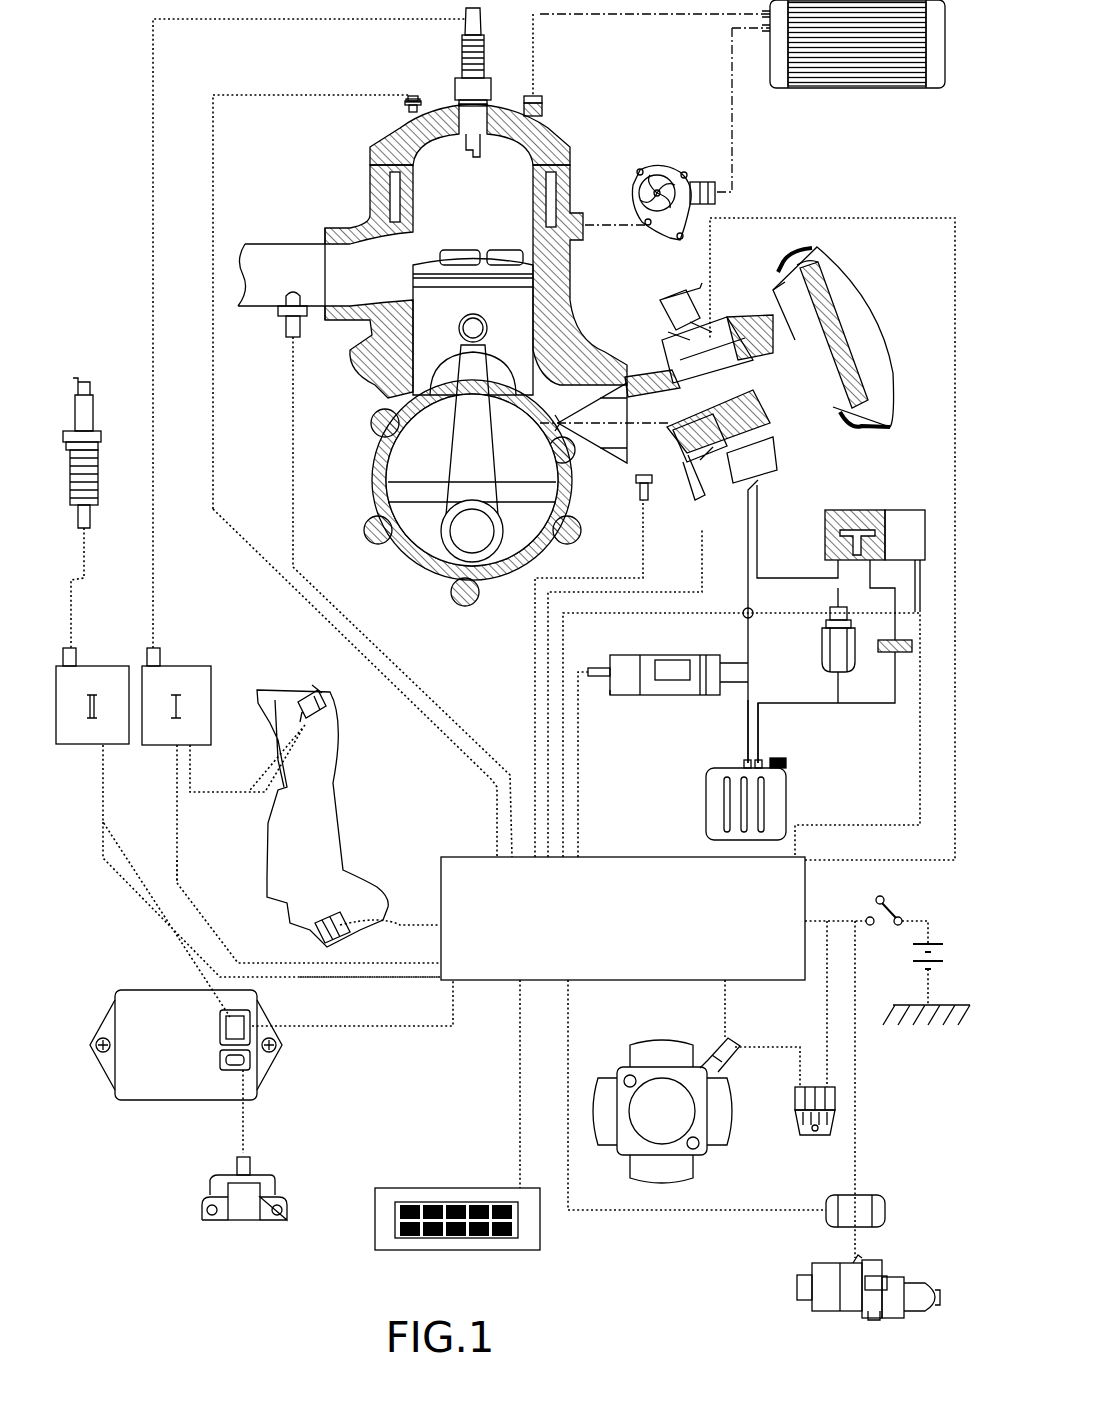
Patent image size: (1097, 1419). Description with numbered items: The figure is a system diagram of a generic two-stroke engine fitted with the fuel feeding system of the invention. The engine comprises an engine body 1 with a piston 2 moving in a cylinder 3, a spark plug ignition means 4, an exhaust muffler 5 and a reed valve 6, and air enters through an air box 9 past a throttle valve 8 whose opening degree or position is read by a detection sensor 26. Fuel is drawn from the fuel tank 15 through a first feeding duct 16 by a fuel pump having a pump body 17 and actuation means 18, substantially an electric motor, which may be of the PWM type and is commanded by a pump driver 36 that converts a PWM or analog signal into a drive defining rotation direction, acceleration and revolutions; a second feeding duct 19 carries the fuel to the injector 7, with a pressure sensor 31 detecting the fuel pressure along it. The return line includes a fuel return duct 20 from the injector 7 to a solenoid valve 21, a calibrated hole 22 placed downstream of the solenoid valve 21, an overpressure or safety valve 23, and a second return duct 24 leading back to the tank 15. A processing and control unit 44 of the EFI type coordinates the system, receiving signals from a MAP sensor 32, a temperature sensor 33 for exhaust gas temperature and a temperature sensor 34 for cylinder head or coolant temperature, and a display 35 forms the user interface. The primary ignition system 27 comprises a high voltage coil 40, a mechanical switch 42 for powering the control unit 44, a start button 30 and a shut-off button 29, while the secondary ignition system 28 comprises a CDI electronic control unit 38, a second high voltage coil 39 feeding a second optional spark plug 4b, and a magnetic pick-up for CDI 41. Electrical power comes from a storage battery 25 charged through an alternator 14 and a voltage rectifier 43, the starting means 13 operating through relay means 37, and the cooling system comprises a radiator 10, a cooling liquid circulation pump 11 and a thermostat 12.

The engine body 1 is at (498, 584).
The piston 2 is at (515, 290).
The cylinder 3 is at (570, 287).
The spark plug ignition means 4 is at (488, 60).
The second optional spark plug 4b is at (84, 376).
The exhaust muffler 5 is at (298, 240).
The reed valve 6 is at (578, 447).
The injector 7 is at (691, 470).
The throttle valve 8 is at (732, 412).
The air box 9 is at (867, 335).
The radiator 10 is at (827, 95).
The cooling liquid circulation pump 11 is at (636, 185).
The thermostat 12 is at (540, 100).
The starting means 13 is at (920, 1285).
The alternator 14 is at (655, 1040).
The fuel tank 15 is at (788, 786).
The first feeding duct 16 is at (745, 723).
The pump body 17 is at (710, 655).
The actuation means 18 is at (650, 655).
The second feeding duct 19 is at (752, 630).
The fuel return duct 20 is at (762, 560).
The solenoid valve 21 is at (868, 510).
The calibrated hole 22 is at (882, 652).
The overpressure or safety valve 23 is at (822, 660).
The second return duct 24 is at (762, 740).
The storage battery 25 is at (942, 946).
The detection sensor 26 is at (717, 320).
The primary ignition system 27 is at (192, 896).
The secondary ignition system 28 is at (370, 979).
The shut-off button 29 is at (300, 705).
The start button 30 is at (318, 928).
The pressure sensor 31 is at (745, 608).
The MAP sensor 32 is at (641, 502).
The temperature sensor 33 is at (300, 336).
The temperature sensor 34 is at (405, 106).
The display 35 is at (460, 1252).
The pump driver 36 is at (622, 697).
The relay means 37 is at (885, 1205).
The electronic control unit 38 is at (172, 1101).
The second high voltage coil 39 is at (88, 664).
The high voltage coil 40 is at (172, 664).
The magnetic pick-up for CDI 41 is at (248, 1222).
The mechanical switch 42 is at (900, 908).
The voltage rectifier 43 is at (805, 1133).
The processing and control unit 44 is at (448, 855).